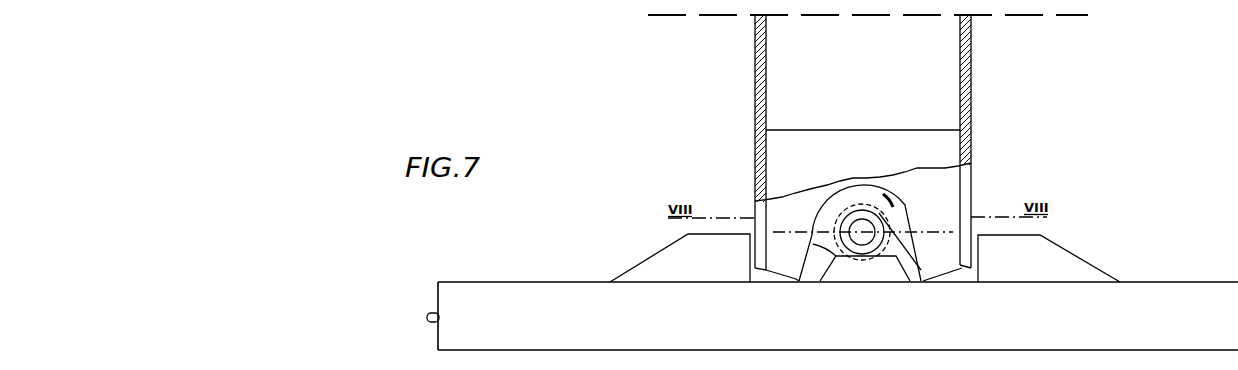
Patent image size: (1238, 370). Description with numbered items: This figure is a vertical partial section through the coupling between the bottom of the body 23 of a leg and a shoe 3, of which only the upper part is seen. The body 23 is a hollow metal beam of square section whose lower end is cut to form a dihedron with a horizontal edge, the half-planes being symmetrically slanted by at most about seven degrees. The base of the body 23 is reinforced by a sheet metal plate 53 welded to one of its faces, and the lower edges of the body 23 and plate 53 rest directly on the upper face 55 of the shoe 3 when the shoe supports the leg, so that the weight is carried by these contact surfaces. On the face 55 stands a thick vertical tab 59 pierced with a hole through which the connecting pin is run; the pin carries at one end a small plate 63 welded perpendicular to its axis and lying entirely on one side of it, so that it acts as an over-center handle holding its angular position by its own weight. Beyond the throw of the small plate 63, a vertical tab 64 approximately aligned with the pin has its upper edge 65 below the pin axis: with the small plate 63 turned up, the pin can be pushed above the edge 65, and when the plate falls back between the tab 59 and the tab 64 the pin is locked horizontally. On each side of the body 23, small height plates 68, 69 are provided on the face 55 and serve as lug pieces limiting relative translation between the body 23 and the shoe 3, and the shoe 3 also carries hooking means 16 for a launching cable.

The shoe 3 is at (1192, 291).
The hooking means 16 is at (426, 320).
The body 23 is at (988, 113).
The reinforcing plate 53 is at (852, 130).
The upper face 55 is at (771, 275).
The vertical tab 59 is at (898, 216).
The small plate 63 is at (913, 259).
The vertical tab 64 is at (878, 274).
The edge 65 is at (813, 244).
The left ramp block 68 is at (679, 257).
The small height plate 69 is at (1066, 262).